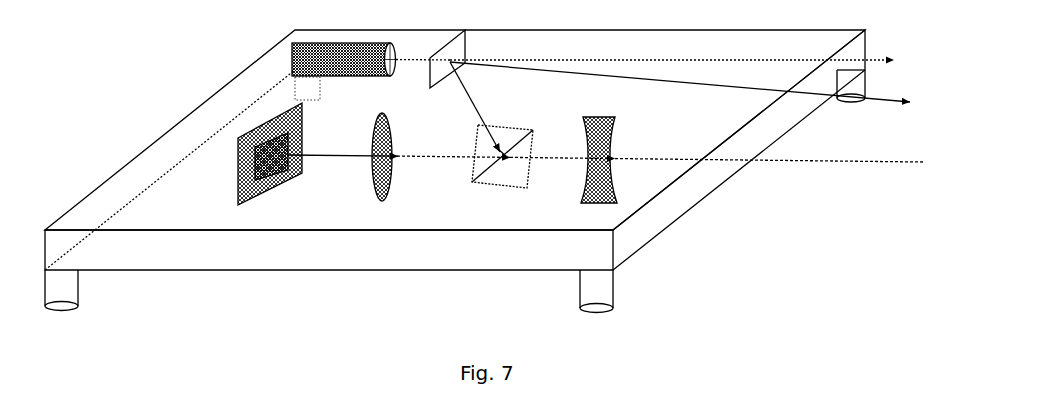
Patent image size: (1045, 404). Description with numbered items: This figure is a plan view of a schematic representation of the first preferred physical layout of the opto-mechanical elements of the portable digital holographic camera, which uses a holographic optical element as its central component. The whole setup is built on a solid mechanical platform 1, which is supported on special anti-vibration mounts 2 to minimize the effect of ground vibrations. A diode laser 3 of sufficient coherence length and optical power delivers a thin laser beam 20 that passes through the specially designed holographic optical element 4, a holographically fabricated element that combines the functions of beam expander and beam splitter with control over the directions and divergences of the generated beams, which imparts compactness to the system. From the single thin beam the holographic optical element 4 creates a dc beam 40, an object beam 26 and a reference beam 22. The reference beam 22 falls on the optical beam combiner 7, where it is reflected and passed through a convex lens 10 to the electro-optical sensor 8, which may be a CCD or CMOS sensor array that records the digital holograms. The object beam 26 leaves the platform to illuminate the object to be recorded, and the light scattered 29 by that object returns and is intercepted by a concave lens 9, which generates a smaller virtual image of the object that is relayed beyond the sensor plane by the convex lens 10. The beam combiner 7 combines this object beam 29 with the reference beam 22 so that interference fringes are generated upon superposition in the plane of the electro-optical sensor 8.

The mechanical platform 1 is at (455, 150).
The anti-vibration mounts 2 is at (462, 191).
The diode laser 3 is at (333, 59).
The holographic optical element 4 is at (456, 57).
The optical beam combiner 7 is at (502, 171).
The electro-optical sensor 8 is at (270, 160).
The concave lens 9 is at (605, 161).
The convex lens 10 is at (393, 160).
The thin laser beam 20 is at (423, 51).
The reference beam 22 is at (479, 110).
The object beam 26 is at (690, 95).
The scattered object light 29 is at (605, 174).
The dc beam 40 is at (683, 46).